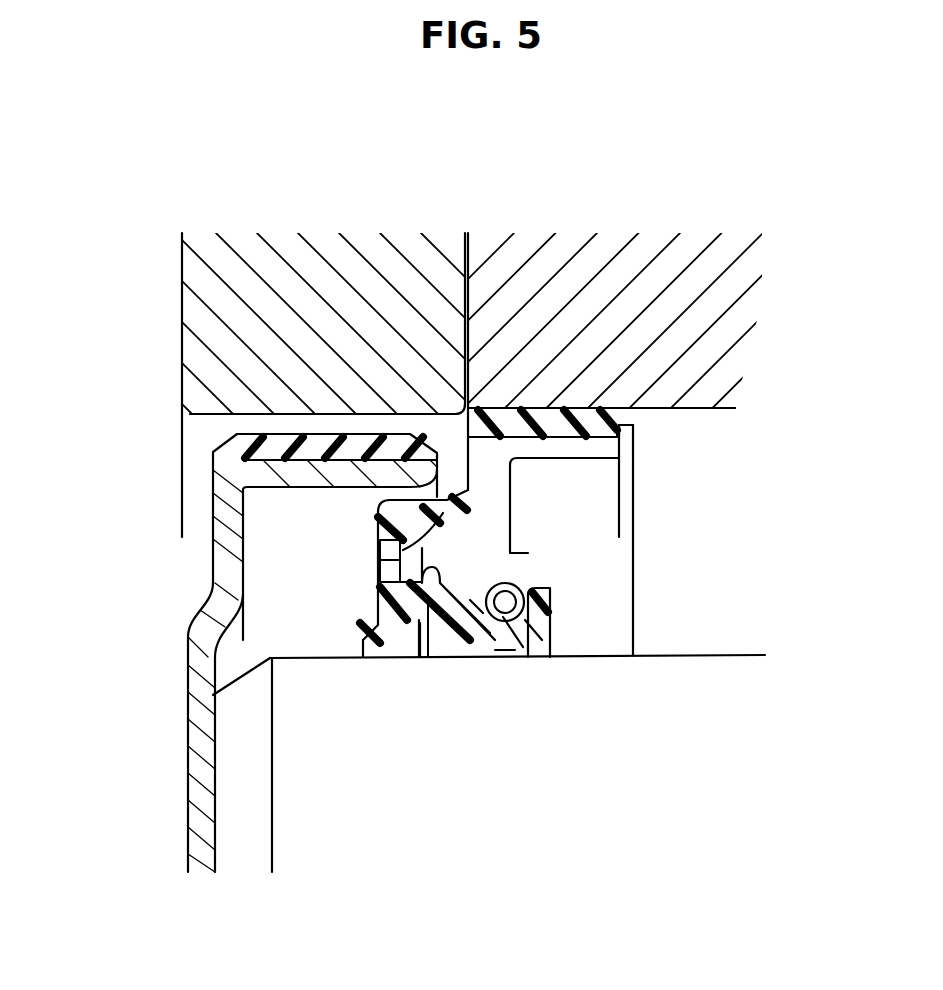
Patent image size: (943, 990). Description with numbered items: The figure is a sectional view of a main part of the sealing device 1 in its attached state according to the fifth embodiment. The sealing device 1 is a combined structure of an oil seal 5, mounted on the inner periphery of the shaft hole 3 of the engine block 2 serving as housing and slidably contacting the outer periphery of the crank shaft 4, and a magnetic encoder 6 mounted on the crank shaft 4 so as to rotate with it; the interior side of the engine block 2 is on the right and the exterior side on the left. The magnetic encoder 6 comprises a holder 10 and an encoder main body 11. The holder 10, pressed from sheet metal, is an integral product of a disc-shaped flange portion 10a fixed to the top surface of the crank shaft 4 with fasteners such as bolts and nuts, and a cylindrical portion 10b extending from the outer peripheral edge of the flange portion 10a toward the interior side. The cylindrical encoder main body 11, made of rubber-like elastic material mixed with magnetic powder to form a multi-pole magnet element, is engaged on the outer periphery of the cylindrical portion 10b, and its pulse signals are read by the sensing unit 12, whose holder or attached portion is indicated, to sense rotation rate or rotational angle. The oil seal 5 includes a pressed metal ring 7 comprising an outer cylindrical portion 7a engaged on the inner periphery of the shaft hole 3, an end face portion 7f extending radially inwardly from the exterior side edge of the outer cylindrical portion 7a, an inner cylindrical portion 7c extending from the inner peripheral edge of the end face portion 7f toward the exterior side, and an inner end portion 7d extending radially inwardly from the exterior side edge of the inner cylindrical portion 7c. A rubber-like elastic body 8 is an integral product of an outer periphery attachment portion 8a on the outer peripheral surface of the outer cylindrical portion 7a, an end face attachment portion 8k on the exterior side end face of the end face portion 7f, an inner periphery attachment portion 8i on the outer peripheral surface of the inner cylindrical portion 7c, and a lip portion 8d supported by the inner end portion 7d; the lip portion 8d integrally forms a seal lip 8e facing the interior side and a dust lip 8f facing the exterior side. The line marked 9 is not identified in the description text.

The sealing device 1 is at (450, 443).
The engine block 2 is at (677, 257).
The shaft hole 3 is at (713, 442).
The crank shaft 4 is at (765, 645).
The oil seal 5 is at (628, 410).
The magnetic encoder 6 is at (212, 445).
The metal ring 7 is at (569, 527).
The outer cylindrical portion 7a is at (537, 410).
The inner cylindrical portion 7c is at (445, 560).
The inner end portion 7d is at (380, 563).
The end face portion 7f is at (500, 478).
The rubber-like elastic body 8 is at (601, 534).
The outer periphery attachment portion 8a is at (573, 410).
The lip portion 8d is at (428, 603).
The seal lip 8e is at (502, 645).
The dust lip 8f is at (393, 633).
The inner periphery attachment portion 8i is at (520, 592).
The end face attachment portion 8k is at (512, 553).
The shaft surface 9 is at (677, 657).
The holder 10 is at (243, 653).
The flange portion 10a is at (200, 770).
The cylindrical portion 10b is at (323, 487).
The encoder main body 11 is at (318, 440).
The sensing unit 12 is at (198, 285).